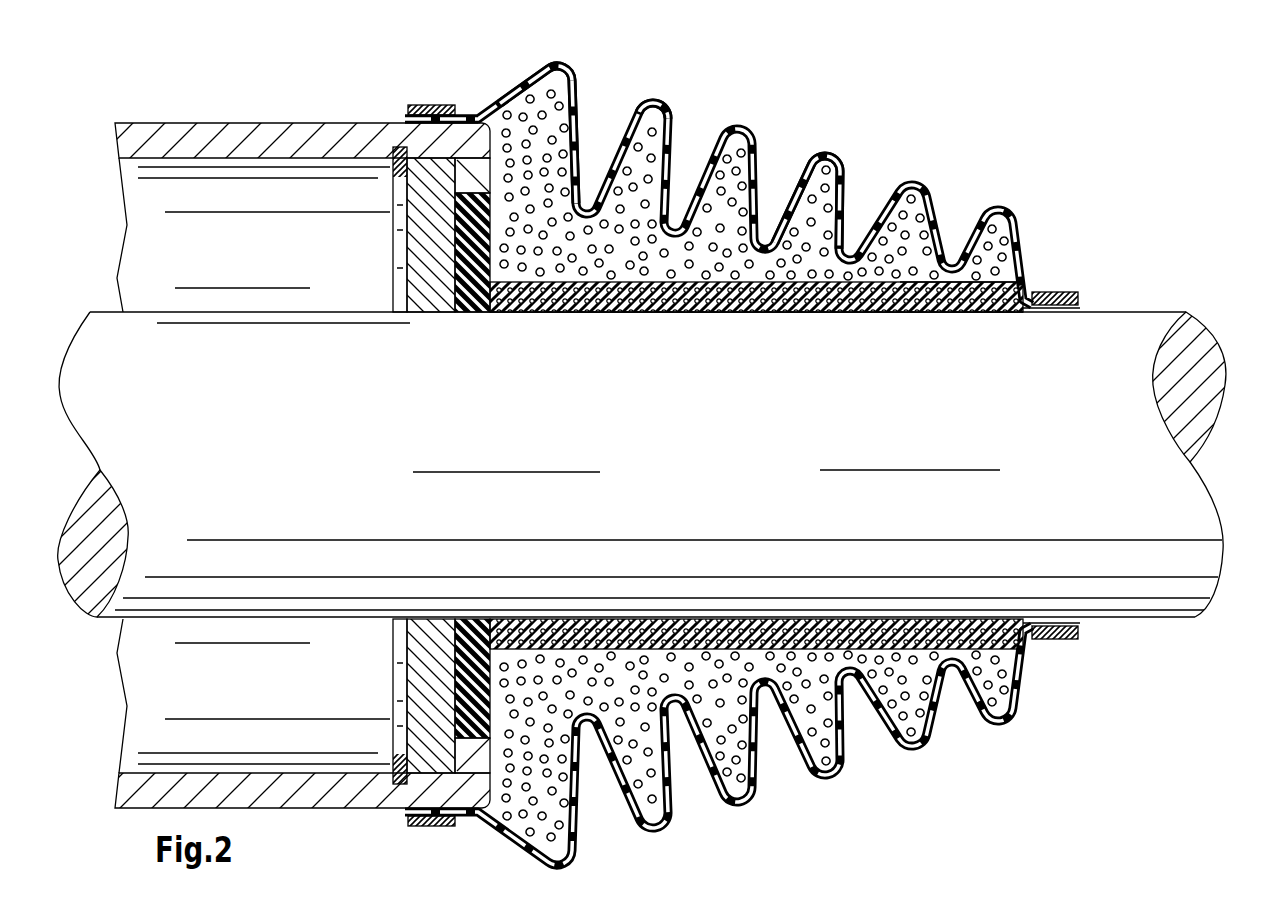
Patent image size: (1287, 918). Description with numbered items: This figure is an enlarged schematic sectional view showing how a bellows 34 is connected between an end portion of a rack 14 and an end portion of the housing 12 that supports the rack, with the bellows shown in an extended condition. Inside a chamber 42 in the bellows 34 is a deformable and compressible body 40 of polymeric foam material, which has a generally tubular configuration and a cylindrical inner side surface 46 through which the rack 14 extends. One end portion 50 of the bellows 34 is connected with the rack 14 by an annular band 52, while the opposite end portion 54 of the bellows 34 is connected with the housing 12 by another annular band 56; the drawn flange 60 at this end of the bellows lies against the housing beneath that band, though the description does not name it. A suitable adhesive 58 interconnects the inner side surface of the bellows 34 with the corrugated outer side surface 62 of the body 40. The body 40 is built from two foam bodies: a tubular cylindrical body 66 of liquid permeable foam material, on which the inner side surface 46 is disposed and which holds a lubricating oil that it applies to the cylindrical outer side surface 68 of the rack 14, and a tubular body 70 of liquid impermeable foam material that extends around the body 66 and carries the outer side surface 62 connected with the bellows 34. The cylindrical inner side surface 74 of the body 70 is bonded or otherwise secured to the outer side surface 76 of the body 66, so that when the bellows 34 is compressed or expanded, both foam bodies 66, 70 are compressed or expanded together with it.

The housing 12 is at (104, 122).
The rack 14 is at (128, 377).
The bellows 34 is at (718, 181).
The deformable and compressible body 40 is at (827, 237).
The chamber 42 is at (678, 122).
The cylindrical inner side surface 46 is at (840, 312).
The end portion of the bellows 50 is at (1064, 290).
The annular band 52 is at (1040, 636).
The opposite end portion of the bellows 54 is at (426, 113).
The annular band 56 is at (425, 826).
The adhesive 58 is at (587, 90).
The boot end flange 60 is at (521, 94).
The corrugated outer side surface 62 is at (572, 156).
The body of liquid permeable foam material 66 is at (563, 316).
The cylindrical outer side surface of the rack 68 is at (1170, 528).
The body of liquid impermeable foam material 70 is at (720, 240).
The cylindrical inner side surface 74 is at (935, 278).
The outer side surface 76 is at (756, 273).